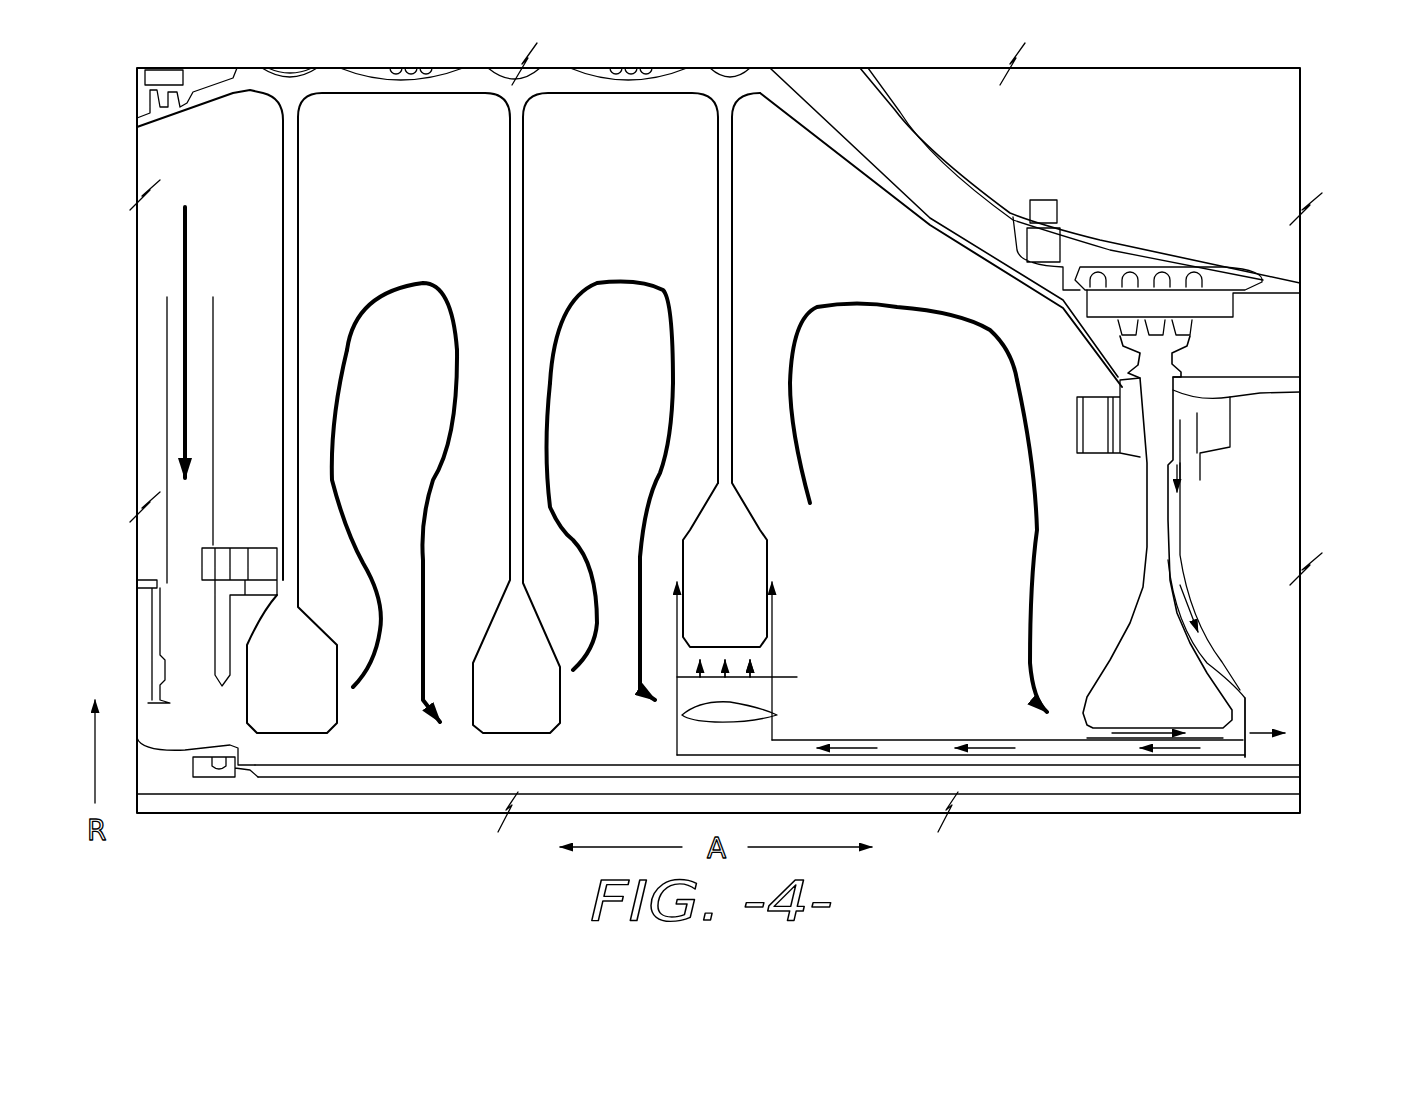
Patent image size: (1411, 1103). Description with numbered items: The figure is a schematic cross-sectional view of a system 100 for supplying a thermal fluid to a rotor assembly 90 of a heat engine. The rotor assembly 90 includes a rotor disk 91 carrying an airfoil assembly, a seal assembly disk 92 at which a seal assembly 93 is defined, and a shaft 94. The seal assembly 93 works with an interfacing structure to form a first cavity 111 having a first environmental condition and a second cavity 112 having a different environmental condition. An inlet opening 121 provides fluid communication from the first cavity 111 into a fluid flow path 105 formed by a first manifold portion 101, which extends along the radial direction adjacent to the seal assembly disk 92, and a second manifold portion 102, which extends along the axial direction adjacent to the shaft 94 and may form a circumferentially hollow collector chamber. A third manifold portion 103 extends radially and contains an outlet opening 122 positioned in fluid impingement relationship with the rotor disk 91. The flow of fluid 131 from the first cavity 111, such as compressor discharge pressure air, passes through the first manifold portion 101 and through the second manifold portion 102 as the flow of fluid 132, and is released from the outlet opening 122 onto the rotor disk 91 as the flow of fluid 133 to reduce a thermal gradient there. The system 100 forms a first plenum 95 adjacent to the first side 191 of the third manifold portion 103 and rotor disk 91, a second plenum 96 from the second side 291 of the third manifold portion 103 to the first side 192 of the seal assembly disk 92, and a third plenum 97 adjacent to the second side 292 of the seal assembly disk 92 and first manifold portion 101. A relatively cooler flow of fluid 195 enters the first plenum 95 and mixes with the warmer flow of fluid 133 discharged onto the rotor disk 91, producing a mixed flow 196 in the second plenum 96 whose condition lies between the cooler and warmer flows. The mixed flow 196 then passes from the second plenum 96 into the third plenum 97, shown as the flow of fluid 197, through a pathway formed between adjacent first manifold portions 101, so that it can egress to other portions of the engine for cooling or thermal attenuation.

The rotor assembly 90 is at (742, 40).
The rotor disk 91 is at (740, 532).
The seal assembly disk 92 is at (1157, 537).
The seal assembly 93 is at (1270, 335).
The shaft 94 is at (445, 766).
The first plenum 95 is at (620, 523).
The second plenum 96 is at (939, 583).
The third plenum 97 is at (1264, 609).
The system 100 is at (1008, 686).
The first manifold portion 101 is at (1245, 697).
The second manifold portion 102 is at (907, 728).
The third manifold portion 103 is at (778, 712).
The fluid flow path 105 is at (1180, 555).
The first cavity 111 is at (1215, 331).
The second cavity 112 is at (1087, 327).
The inlet opening 121 is at (1200, 372).
The outlet opening 122 is at (800, 677).
The flow of fluid 131 is at (1180, 440).
The flow of fluid 132 is at (993, 752).
The flow of fluid 133 is at (780, 647).
The first side 191 is at (700, 247).
The first side 192 is at (1076, 688).
The flow of fluid 195 is at (187, 257).
The mixed flow 196 is at (887, 305).
The flow of fluid 197 is at (1165, 725).
The second side 291 is at (803, 603).
The second side 292 is at (1252, 666).